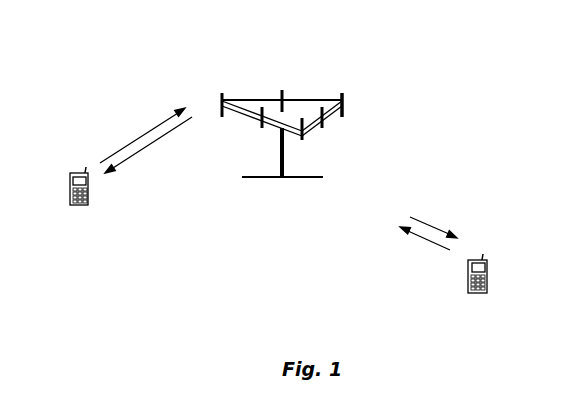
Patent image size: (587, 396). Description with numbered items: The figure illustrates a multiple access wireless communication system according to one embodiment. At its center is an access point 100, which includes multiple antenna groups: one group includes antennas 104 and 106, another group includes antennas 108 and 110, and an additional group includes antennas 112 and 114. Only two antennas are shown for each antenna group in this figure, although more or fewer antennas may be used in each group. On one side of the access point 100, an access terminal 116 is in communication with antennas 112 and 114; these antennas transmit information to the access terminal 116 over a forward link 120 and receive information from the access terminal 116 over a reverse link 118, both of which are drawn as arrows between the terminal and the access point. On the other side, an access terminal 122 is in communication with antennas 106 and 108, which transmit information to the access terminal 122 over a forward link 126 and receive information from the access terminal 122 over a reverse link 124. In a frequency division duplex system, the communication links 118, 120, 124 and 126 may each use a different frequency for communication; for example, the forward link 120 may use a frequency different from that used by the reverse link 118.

The access point 100 is at (265, 178).
The antenna 104 is at (303, 140).
The antenna 106 is at (322, 128).
The antenna 108 is at (345, 113).
The antenna 110 is at (283, 92).
The antenna 112 is at (230, 98).
The antenna 114 is at (262, 128).
The access terminal 116 is at (78, 172).
The reverse link 118 is at (143, 135).
The forward link 120 is at (153, 145).
The access terminal 122 is at (478, 255).
The reverse link 124 is at (417, 240).
The forward link 126 is at (435, 229).